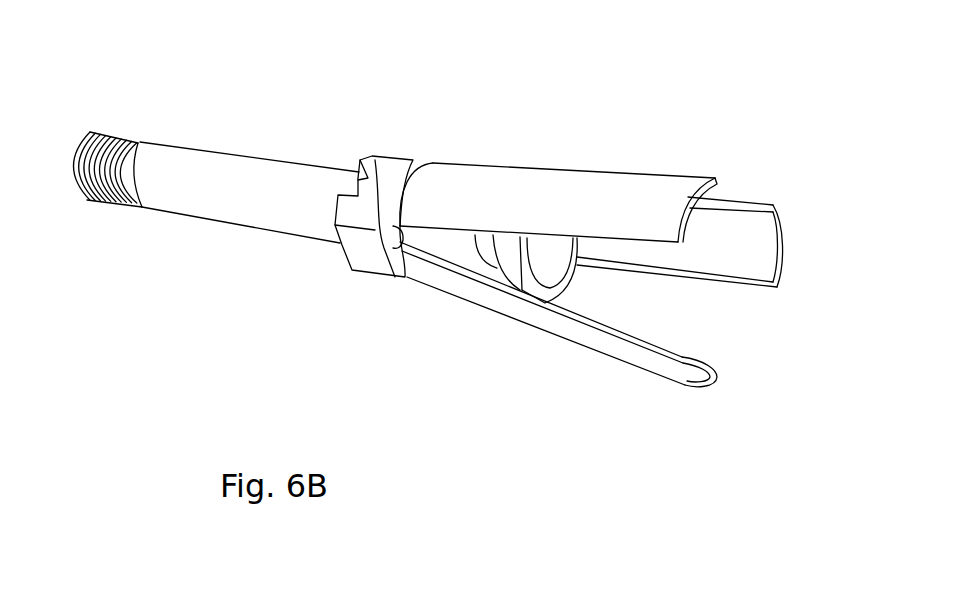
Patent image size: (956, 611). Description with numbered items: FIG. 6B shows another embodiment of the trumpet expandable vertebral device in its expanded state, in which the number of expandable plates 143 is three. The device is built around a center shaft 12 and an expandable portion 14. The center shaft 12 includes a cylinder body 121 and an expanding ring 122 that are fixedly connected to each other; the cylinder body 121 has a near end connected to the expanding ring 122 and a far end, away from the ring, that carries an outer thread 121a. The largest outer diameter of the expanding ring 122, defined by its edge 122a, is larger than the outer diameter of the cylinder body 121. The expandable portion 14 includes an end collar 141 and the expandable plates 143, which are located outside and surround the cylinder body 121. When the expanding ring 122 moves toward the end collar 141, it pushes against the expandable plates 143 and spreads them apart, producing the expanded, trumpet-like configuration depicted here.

The center shaft 12 is at (217, 162).
The cylinder body 121 is at (245, 200).
The outer thread 121a is at (122, 143).
The end collar 141 is at (362, 217).
The expandable portion 14 is at (591, 268).
The expandable plates 143 is at (537, 188).
The expanding ring 122 is at (487, 247).
The edge 122a is at (510, 258).